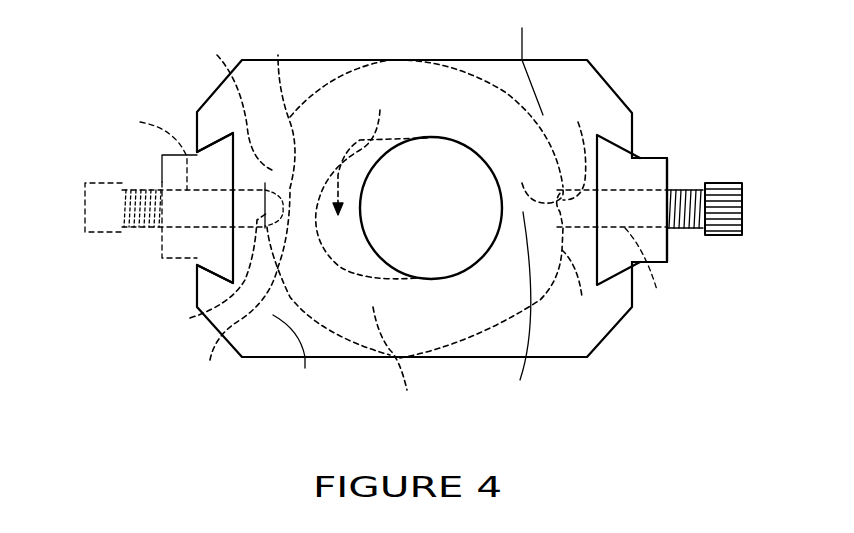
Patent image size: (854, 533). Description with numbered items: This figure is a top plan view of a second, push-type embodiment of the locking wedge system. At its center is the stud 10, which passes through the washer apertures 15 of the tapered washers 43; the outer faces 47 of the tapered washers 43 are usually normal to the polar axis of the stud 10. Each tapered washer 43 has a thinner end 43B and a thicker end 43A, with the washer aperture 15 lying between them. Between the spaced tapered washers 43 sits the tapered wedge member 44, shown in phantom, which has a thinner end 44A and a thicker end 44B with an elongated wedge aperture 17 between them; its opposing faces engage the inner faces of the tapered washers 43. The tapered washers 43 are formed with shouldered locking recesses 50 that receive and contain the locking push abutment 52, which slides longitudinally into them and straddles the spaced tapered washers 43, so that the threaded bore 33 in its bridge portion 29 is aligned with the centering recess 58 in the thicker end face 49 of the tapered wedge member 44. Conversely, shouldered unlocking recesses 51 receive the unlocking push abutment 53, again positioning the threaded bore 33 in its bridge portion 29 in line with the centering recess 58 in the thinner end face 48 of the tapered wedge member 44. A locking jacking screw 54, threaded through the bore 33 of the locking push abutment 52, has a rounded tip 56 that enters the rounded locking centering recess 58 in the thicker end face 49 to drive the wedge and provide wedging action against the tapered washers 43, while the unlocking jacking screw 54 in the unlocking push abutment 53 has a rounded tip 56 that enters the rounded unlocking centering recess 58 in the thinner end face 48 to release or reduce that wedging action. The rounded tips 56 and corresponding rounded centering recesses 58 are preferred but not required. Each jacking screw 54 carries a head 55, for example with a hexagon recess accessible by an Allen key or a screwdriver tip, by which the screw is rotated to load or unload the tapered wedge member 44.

The stud 10 is at (417, 242).
The washer aperture 15 is at (423, 203).
The elongated wedge aperture 17 is at (371, 176).
The bridge portion 29 is at (162, 182).
The threaded bore 33 is at (394, 213).
The tapered washer 43 is at (592, 360).
The thicker end 43A is at (302, 367).
The thinner end 43B is at (530, 57).
The tapered wedge member 44 is at (415, 244).
The thinner end 44A is at (241, 228).
The thicker end 44B is at (481, 316).
The outer face 47 is at (607, 107).
The thinner end face 48 is at (229, 99).
The thicker end face 49 is at (584, 288).
The shouldered locking recess 50 is at (623, 143).
The shouldered unlocking recess 51 is at (225, 135).
The locking push abutment 52 is at (667, 163).
The unlocking push abutment 53 is at (187, 240).
The jacking screw 54 is at (137, 232).
The head 55 is at (85, 232).
The rounded tip 56 is at (359, 221).
The centering recess 58 is at (419, 123).